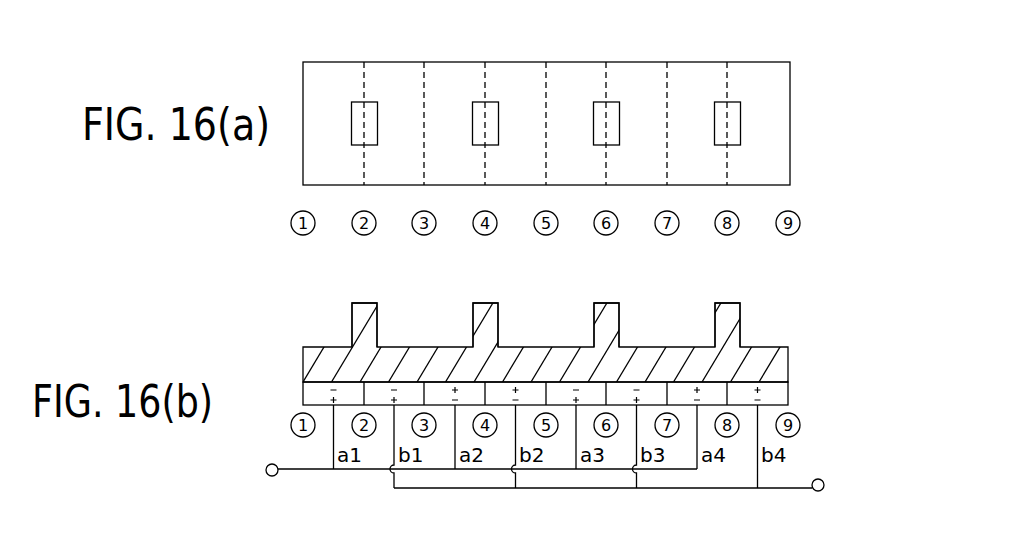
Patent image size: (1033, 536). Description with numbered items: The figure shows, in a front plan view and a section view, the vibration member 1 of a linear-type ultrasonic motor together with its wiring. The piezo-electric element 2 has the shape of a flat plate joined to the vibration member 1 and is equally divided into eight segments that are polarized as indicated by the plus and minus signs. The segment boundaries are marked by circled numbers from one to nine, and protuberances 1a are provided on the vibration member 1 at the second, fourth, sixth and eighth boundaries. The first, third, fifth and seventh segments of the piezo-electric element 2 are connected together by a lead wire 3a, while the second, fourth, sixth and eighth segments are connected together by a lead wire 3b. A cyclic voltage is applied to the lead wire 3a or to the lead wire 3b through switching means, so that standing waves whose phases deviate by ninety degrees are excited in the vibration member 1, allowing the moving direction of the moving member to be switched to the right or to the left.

In FIG. 16A, the vibration member 1 is at (767, 133).
In FIG. 16B, the vibration member 1 is at (778, 357).
In FIG. 16A, the protuberances 1a is at (737, 108).
In FIG. 16B, the protuberances 1a is at (730, 308).
In FIG. 16B, the piezo-electric element 2 is at (778, 392).
In FIG. 16B, the lead wire 3a is at (268, 465).
In FIG. 16B, the lead wire 3b is at (823, 481).